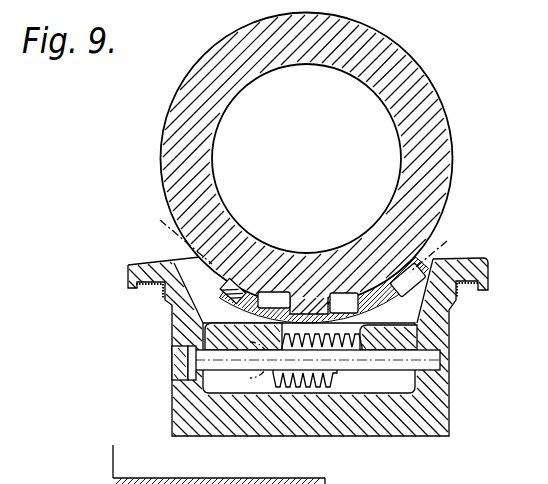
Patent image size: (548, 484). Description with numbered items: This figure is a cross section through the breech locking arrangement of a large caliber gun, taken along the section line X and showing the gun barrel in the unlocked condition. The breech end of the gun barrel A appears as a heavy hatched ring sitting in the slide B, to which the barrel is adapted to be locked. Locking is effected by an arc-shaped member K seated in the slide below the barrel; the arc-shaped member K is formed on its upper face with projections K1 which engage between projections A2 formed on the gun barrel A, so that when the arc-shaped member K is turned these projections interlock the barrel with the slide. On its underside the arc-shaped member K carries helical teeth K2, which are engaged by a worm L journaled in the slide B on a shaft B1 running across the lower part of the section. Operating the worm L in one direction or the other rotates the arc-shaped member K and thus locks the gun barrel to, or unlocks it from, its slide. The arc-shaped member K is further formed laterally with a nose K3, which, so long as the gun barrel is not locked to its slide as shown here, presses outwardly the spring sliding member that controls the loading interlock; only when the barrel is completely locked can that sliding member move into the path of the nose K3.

The breech end of gun barrel A is at (424, 127).
The projections on gun barrel A2 is at (238, 290).
The arc-shaped member K is at (460, 306).
The projections on arc-shaped member K1 is at (272, 300).
The helical teeth K2 is at (383, 441).
The nose of arc-shaped member K3 is at (186, 360).
The slide B is at (433, 413).
The shaft B1 is at (402, 361).
The worm L is at (296, 382).
The section line X- X is at (310, 239).